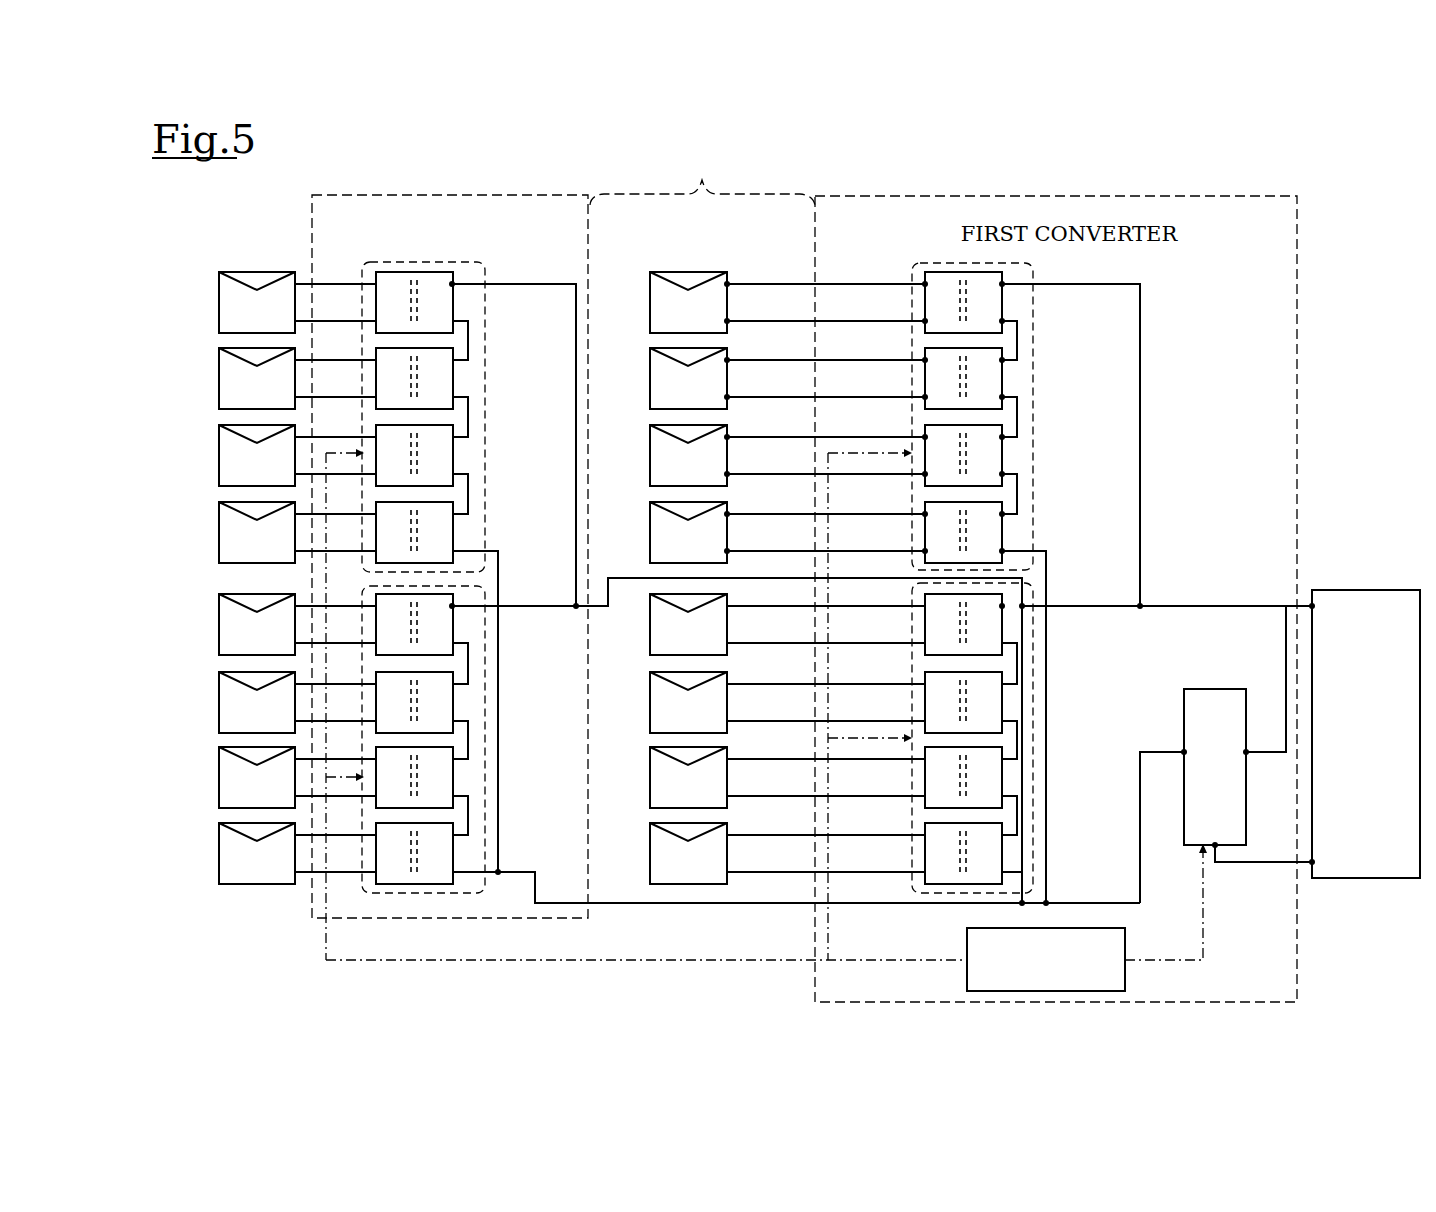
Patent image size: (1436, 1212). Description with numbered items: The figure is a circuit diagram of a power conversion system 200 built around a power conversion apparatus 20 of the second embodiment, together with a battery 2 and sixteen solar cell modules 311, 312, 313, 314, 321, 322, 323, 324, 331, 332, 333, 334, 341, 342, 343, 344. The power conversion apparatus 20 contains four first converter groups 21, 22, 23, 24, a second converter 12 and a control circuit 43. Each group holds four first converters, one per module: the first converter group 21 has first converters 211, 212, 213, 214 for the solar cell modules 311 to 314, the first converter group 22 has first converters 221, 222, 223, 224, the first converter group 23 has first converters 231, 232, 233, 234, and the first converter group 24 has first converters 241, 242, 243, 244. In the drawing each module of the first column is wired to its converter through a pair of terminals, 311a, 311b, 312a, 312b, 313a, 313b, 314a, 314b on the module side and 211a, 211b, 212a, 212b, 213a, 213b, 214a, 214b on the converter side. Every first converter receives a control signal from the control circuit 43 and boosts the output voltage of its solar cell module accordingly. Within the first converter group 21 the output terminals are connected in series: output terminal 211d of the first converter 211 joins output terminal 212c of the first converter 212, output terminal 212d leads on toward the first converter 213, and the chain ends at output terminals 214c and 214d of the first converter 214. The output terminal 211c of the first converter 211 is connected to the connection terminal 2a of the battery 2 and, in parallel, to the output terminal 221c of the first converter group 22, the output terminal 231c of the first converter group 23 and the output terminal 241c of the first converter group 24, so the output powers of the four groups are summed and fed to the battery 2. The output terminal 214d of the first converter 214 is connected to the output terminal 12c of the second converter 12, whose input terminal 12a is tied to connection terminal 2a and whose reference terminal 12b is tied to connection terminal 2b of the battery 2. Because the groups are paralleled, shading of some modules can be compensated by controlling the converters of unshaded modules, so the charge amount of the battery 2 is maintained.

The power conversion system 200 is at (1340, 182).
The power conversion apparatus 20 is at (700, 178).
The first converter group 21 is at (920, 263).
The first converter group 22 is at (927, 893).
The first converter group 23 is at (412, 262).
The first converter group 24 is at (377, 893).
The battery 2 is at (1370, 590).
The connection terminal 2a is at (1312, 606).
The connection terminal 2b is at (1312, 862).
The second converter 12 is at (1208, 689).
The input terminal 12a is at (1246, 752).
The reference terminal 12b is at (1215, 846).
The output terminal 12c is at (1184, 752).
The control circuit 43 is at (1125, 938).
The solar cell module 311 is at (650, 297).
The solar cell module 312 is at (650, 373).
The solar cell module 313 is at (650, 450).
The solar cell module 314 is at (650, 527).
The solar cell module 321 is at (650, 649).
The solar cell module 322 is at (650, 725).
The solar cell module 323 is at (650, 800).
The solar cell module 324 is at (650, 876).
The solar cell module 331 is at (219, 300).
The solar cell module 332 is at (219, 376).
The solar cell module 333 is at (219, 453).
The solar cell module 334 is at (219, 530).
The solar cell module 341 is at (219, 622).
The solar cell module 342 is at (219, 700).
The solar cell module 343 is at (219, 775).
The solar cell module 344 is at (219, 851).
The solar cell positive terminal 311a is at (727, 284).
The solar cell negative terminal 311b is at (727, 321).
The solar cell positive terminal 312a is at (727, 360).
The solar cell negative terminal 312b is at (727, 397).
The solar cell positive terminal 313a is at (727, 437).
The solar cell negative terminal 313b is at (727, 474).
The solar cell positive terminal 314a is at (727, 514).
The solar cell negative terminal 314b is at (727, 551).
The first converter 211 is at (1004, 303).
The first converter 212 is at (1004, 379).
The first converter 213 is at (1004, 458).
The first converter 214 is at (1004, 536).
The first converter 221 is at (1004, 628).
The first converter 222 is at (1004, 703).
The first converter 223 is at (1004, 778).
The first converter 224 is at (1004, 853).
The first converter 231 is at (455, 300).
The first converter 232 is at (455, 376).
The first converter 233 is at (455, 453).
The first converter 234 is at (455, 530).
The first converter 241 is at (455, 624).
The first converter 242 is at (455, 700).
The first converter 243 is at (455, 775).
The first converter 244 is at (455, 851).
The converter input terminal 211a is at (923, 284).
The converter input terminal 211b is at (923, 321).
The converter input terminal 212a is at (923, 360).
The converter input terminal 212b is at (923, 397).
The converter input terminal 213a is at (923, 437).
The converter input terminal 213b is at (923, 474).
The converter input terminal 214a is at (923, 514).
The converter input terminal 214b is at (923, 551).
The output terminal 211c is at (1002, 284).
The output terminal 211d is at (1002, 321).
The output terminal 212c is at (1002, 360).
The output terminal 212d is at (1002, 397).
The output terminal 214c is at (1002, 514).
The output terminal 214d is at (1002, 551).
The output terminal 221c is at (1002, 606).
The output terminal 231c is at (452, 284).
The output terminal 241c is at (452, 606).